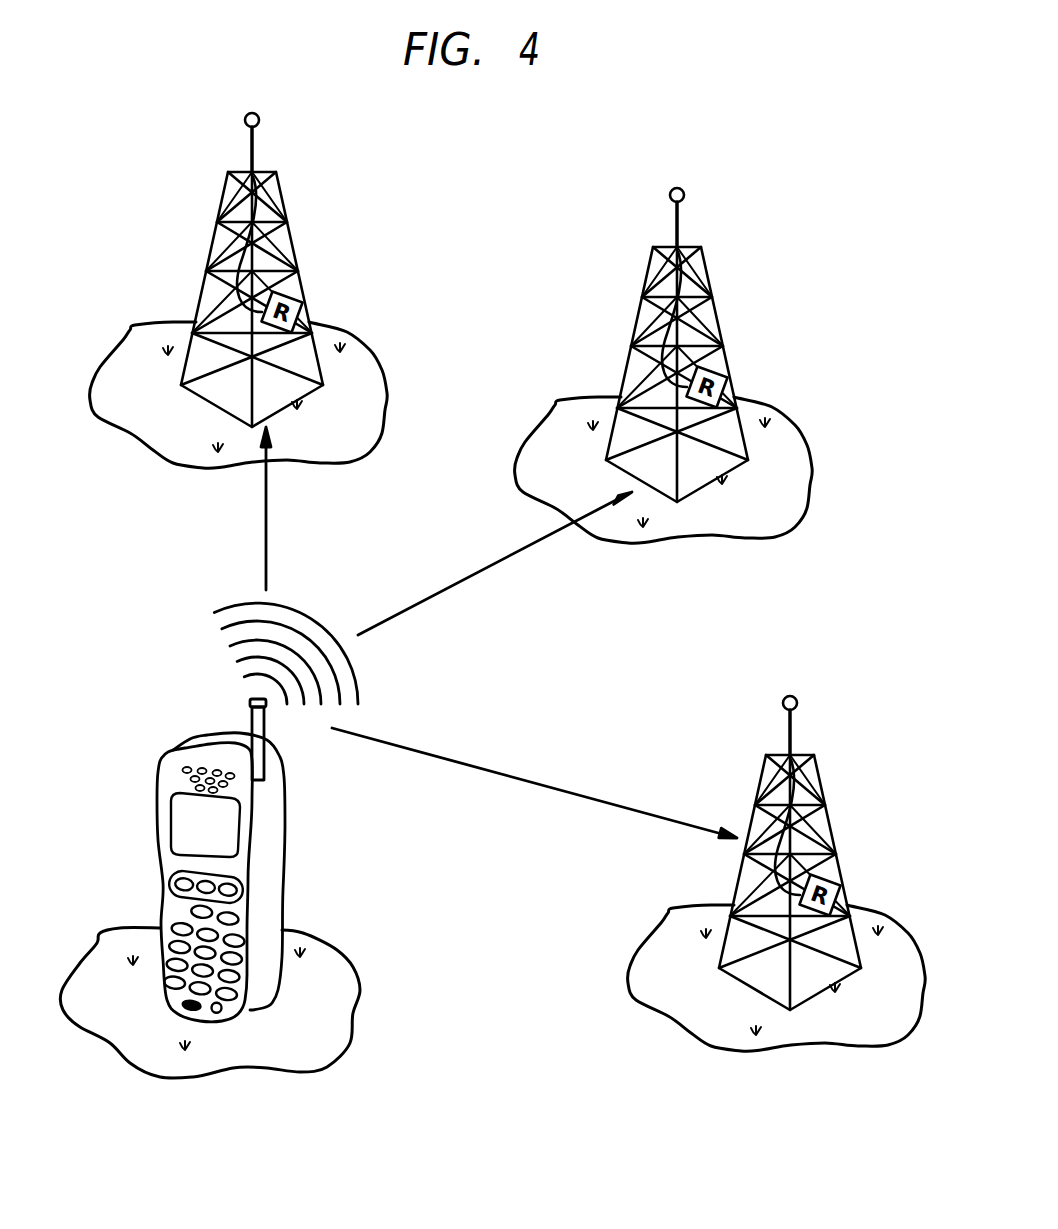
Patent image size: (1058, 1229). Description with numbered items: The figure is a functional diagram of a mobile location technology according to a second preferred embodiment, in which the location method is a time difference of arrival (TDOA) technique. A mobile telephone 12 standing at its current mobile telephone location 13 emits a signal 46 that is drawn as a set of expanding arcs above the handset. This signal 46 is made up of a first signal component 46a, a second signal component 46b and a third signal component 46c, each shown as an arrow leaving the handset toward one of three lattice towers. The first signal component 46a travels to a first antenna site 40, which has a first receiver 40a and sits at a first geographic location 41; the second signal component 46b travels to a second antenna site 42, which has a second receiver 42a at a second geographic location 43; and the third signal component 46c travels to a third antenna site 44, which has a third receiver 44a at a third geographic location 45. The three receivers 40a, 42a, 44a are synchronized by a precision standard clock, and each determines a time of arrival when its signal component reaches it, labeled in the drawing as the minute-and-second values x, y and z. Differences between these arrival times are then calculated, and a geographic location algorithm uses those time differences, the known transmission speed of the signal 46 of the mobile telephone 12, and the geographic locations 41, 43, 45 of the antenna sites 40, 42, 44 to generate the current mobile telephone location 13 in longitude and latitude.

The mobile telephone 12 is at (274, 840).
The current mobile telephone location 13 is at (347, 945).
The first antenna site 40 is at (298, 197).
The first receiver 40a is at (300, 308).
The first geographic location 41 is at (150, 330).
The second antenna site 42 is at (723, 272).
The second receiver 42a is at (725, 383).
The second geographic location 43 is at (575, 405).
The third antenna site 44 is at (835, 783).
The third receiver 44a is at (838, 891).
The third geographic location 45 is at (688, 920).
The signal 46 is at (298, 628).
The first signal component 46a is at (265, 533).
The second signal component 46b is at (458, 583).
The third signal component 46c is at (500, 779).